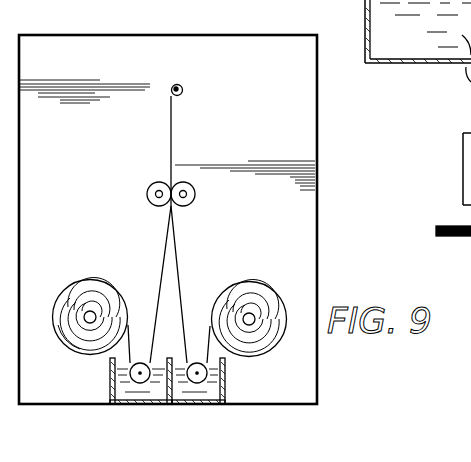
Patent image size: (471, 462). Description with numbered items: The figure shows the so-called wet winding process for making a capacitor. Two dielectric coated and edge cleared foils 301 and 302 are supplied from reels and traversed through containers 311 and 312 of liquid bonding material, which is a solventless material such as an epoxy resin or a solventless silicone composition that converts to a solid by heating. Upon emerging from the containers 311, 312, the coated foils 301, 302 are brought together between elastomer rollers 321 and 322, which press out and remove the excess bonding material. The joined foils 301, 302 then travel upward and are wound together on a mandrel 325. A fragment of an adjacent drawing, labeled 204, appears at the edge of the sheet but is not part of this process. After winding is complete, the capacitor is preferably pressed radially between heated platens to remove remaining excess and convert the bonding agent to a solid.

The mandrel 325 is at (181, 84).
The elastomer roller 322 is at (147, 193).
The elastomer roller 321 is at (195, 197).
The dielectric coated and edge cleared foil 302 is at (127, 330).
The dielectric coated and edge cleared foil 301 is at (211, 337).
The container of liquid bonding material 312 is at (115, 381).
The container of liquid bonding material 311 is at (225, 381).
The bar element of adjacent figure 204 is at (470, 251).